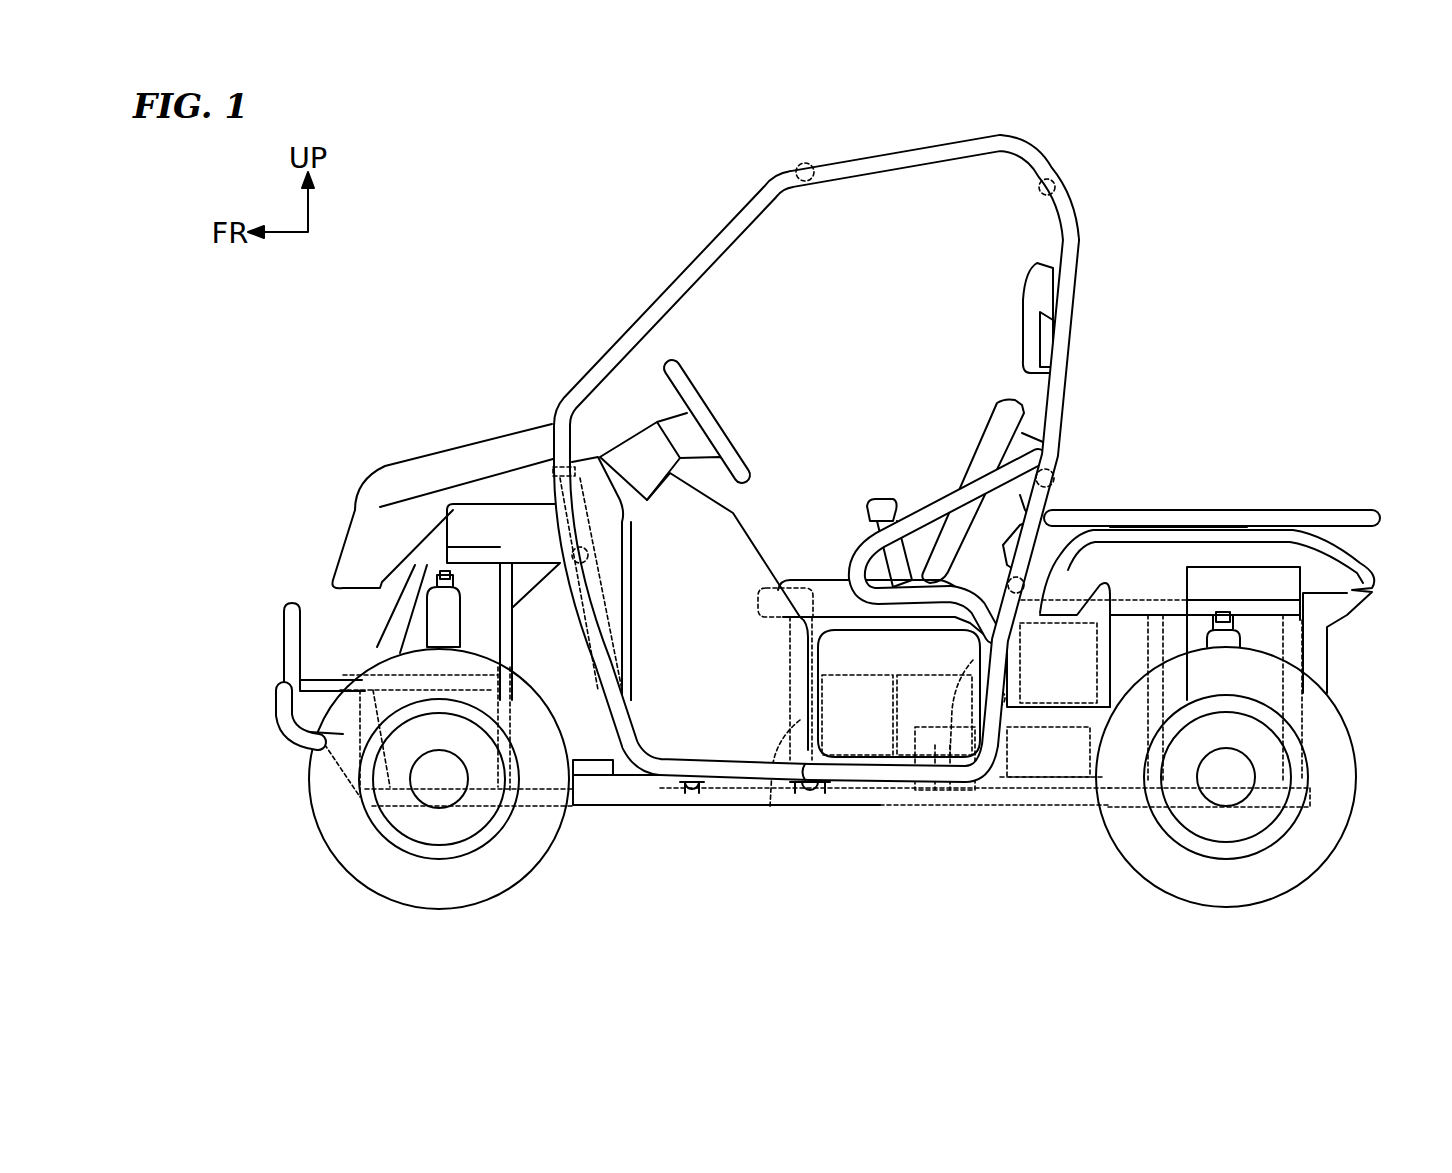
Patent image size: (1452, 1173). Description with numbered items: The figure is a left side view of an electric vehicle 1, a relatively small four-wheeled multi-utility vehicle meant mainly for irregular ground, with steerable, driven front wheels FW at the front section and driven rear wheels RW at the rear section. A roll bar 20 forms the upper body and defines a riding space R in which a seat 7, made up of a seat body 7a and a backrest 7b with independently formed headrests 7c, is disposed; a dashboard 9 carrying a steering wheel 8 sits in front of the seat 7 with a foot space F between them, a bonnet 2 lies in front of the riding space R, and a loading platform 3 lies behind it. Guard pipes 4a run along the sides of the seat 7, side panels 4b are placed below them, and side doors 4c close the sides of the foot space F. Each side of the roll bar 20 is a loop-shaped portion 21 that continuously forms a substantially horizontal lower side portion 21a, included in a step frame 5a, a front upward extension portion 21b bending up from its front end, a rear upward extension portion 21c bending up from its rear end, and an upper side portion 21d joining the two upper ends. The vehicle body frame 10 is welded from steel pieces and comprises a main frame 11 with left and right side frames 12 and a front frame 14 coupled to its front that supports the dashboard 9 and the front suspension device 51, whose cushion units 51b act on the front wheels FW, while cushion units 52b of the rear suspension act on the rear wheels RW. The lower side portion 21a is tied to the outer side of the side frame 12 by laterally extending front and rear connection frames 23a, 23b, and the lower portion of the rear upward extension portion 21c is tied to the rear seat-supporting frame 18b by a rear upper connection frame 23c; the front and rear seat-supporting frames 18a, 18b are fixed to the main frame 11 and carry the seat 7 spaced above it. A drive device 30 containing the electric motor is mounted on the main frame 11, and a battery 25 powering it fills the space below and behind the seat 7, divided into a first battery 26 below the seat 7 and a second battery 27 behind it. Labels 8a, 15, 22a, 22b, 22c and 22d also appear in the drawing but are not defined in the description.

The electric vehicle 1 is at (550, 250).
The bonnet 2 is at (415, 465).
The loading platform 3 is at (1320, 513).
The guard pipes 4a is at (925, 505).
The side panels 4b is at (850, 738).
The side doors 4c is at (730, 542).
The step frame 5a is at (714, 875).
The seat 7 is at (915, 444).
The seat body 7a is at (822, 590).
The backrest 7b is at (980, 430).
The headrests 7c is at (1025, 292).
The steering wheel 8 is at (735, 438).
The steering column 8a is at (660, 450).
The dashboard 9 is at (607, 513).
The vehicle body frame 10 is at (720, 851).
The main frame 11 is at (615, 808).
The side frames 12 is at (745, 797).
The front frame 14 is at (378, 643).
The rear suspension / rear body 15 is at (1330, 667).
The front seat-supporting frame 18a is at (770, 810).
The rear seat-supporting frame 18b is at (950, 770).
The roll bar 20 is at (839, 525).
The loop-shaped portion 21 is at (839, 525).
The lower side portion 21a is at (797, 863).
The front upward extension portion 21b is at (560, 412).
The rear upward extension portion 21c is at (1065, 400).
The upper side portion 21d is at (940, 152).
The front upper joint 22a is at (803, 163).
The rear upper joint 22b is at (1055, 184).
The rear lower joint 22c is at (1023, 590).
The front lower joint 22d is at (578, 550).
The front connection frame 23a is at (692, 797).
The rear connection frame 23b is at (810, 800).
The rear upper connection frame 23c is at (998, 710).
The battery 25 is at (1002, 829).
The first battery 26 is at (945, 755).
The second battery 27 is at (1068, 695).
The drive device 30 is at (1040, 768).
The front suspension device 51 is at (771, 525).
The cushion unit 51b is at (437, 607).
The cushion unit 52b is at (1225, 632).
The foot space F is at (708, 627).
The riding space R is at (895, 218).
The front wheels FW is at (330, 832).
The rear wheels RW is at (1342, 812).